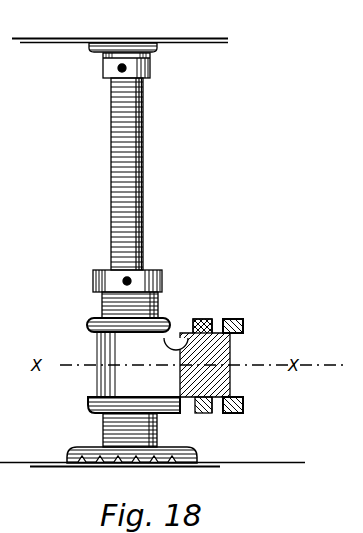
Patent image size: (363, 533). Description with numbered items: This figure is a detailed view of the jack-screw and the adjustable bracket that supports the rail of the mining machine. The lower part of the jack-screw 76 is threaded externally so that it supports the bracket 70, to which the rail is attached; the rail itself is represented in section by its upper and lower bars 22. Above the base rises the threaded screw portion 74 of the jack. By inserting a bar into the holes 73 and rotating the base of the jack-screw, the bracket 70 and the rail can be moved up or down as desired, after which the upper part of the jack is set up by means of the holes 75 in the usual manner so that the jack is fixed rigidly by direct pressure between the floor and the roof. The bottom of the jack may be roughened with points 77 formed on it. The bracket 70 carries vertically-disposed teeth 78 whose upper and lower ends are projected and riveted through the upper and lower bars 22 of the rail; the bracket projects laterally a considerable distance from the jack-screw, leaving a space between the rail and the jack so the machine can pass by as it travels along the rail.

The upper and lower bars of the rail 22 is at (243, 325).
The bracket 70 is at (133, 365).
The holes 73 is at (150, 270).
The threaded rod 74 is at (144, 155).
The holes 75 is at (150, 70).
The lower part of jack-screw 76 is at (160, 300).
The points 77 is at (90, 464).
The vertically-disposed teeth 78 is at (222, 320).